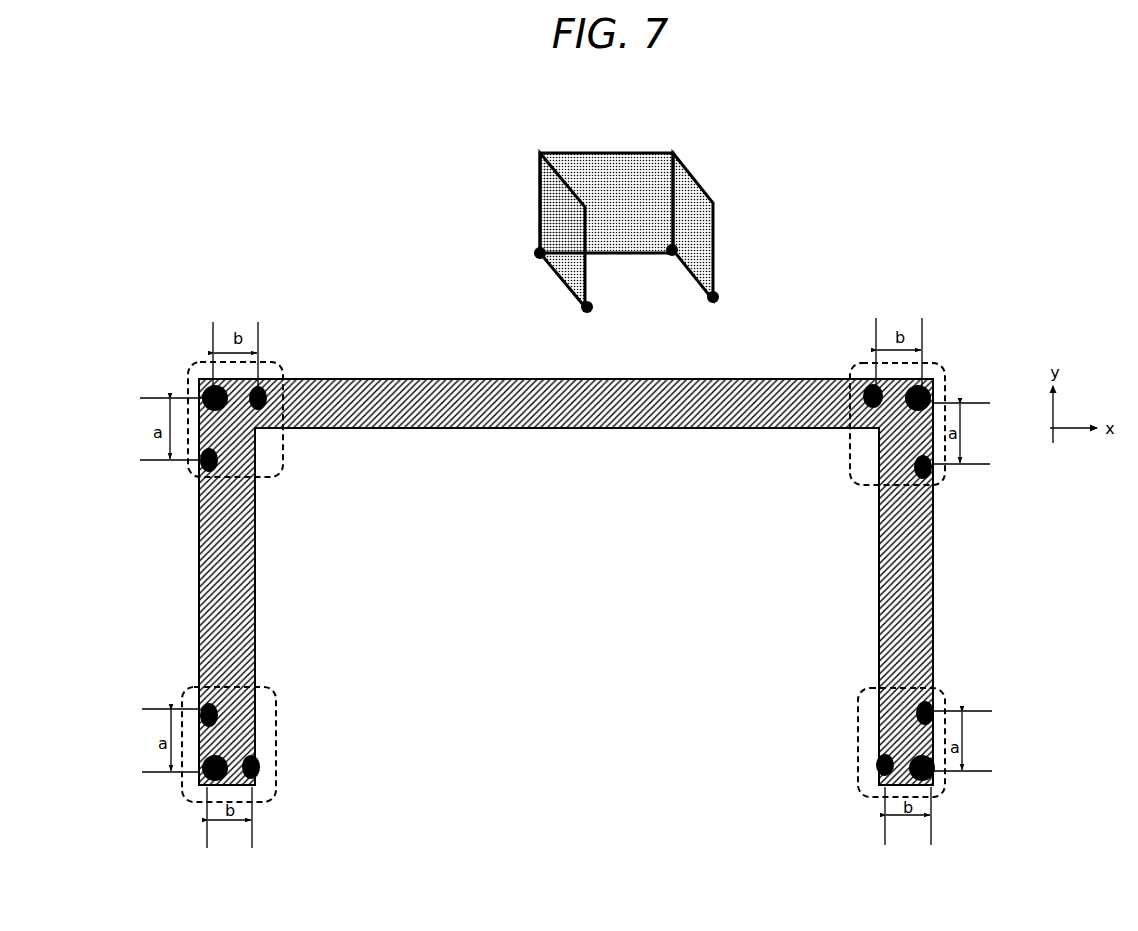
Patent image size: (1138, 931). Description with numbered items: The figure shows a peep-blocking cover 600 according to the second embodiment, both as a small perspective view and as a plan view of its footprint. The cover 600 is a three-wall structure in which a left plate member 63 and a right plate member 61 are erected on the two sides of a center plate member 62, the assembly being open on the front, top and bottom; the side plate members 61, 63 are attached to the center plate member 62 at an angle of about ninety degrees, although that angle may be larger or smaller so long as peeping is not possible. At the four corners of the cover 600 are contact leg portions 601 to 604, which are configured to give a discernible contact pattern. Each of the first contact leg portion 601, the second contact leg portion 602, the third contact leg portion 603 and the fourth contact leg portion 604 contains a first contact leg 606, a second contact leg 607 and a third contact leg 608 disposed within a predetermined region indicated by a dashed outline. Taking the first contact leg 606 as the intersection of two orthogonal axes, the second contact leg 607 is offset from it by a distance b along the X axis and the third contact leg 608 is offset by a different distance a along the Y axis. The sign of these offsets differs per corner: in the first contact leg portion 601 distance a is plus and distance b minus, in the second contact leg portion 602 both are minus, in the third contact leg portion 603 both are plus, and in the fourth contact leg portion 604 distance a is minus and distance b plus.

The peep-blocking cover 600 is at (488, 436).
The first contact leg portion 601 is at (713, 304).
The second contact leg portion 602 is at (670, 258).
The third contact leg portion 603 is at (586, 313).
The fourth contact leg portion 604 is at (536, 259).
The first contact leg 606 is at (210, 386).
The second contact leg 607 is at (263, 410).
The third contact leg 608 is at (198, 468).
The right plate member 61 is at (693, 226).
The center plate member 62 is at (606, 203).
The left plate member 63 is at (562, 230).